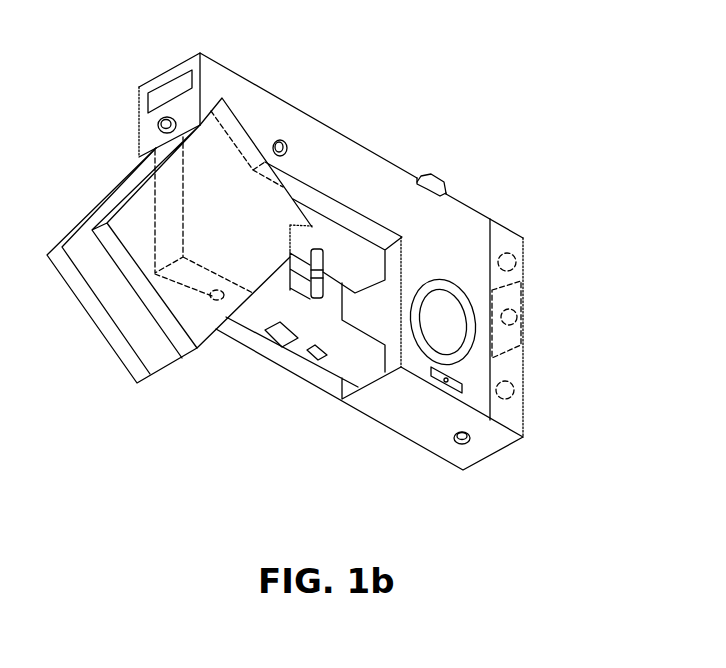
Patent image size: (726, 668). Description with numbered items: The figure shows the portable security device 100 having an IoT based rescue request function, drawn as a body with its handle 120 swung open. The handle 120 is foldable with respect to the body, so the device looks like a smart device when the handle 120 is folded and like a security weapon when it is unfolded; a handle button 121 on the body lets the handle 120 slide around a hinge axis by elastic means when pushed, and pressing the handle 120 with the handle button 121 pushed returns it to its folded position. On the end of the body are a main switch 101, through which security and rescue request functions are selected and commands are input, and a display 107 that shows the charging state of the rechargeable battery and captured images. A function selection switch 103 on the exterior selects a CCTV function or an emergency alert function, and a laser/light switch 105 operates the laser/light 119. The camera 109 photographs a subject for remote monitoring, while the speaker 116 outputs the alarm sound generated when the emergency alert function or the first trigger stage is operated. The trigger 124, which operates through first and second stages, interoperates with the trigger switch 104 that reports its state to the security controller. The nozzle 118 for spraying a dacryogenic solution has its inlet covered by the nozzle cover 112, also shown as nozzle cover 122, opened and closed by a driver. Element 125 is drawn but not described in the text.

The portable security device 100 is at (540, 200).
The main switch 101 is at (158, 127).
The function selection switch 103 is at (428, 178).
The trigger switch 104 is at (281, 250).
The laser/light switch 105 is at (460, 448).
The display 107 is at (165, 92).
The camera 109 is at (521, 256).
The nozzle cover 112 is at (521, 337).
The speaker 116 is at (449, 292).
The nozzle 118 is at (521, 310).
The laser/light 119 is at (520, 388).
The handle 120 is at (100, 316).
The handle button 121 is at (282, 140).
The nozzle cover 122 is at (318, 362).
The trigger 124 is at (318, 249).
The hole 125 is at (220, 303).